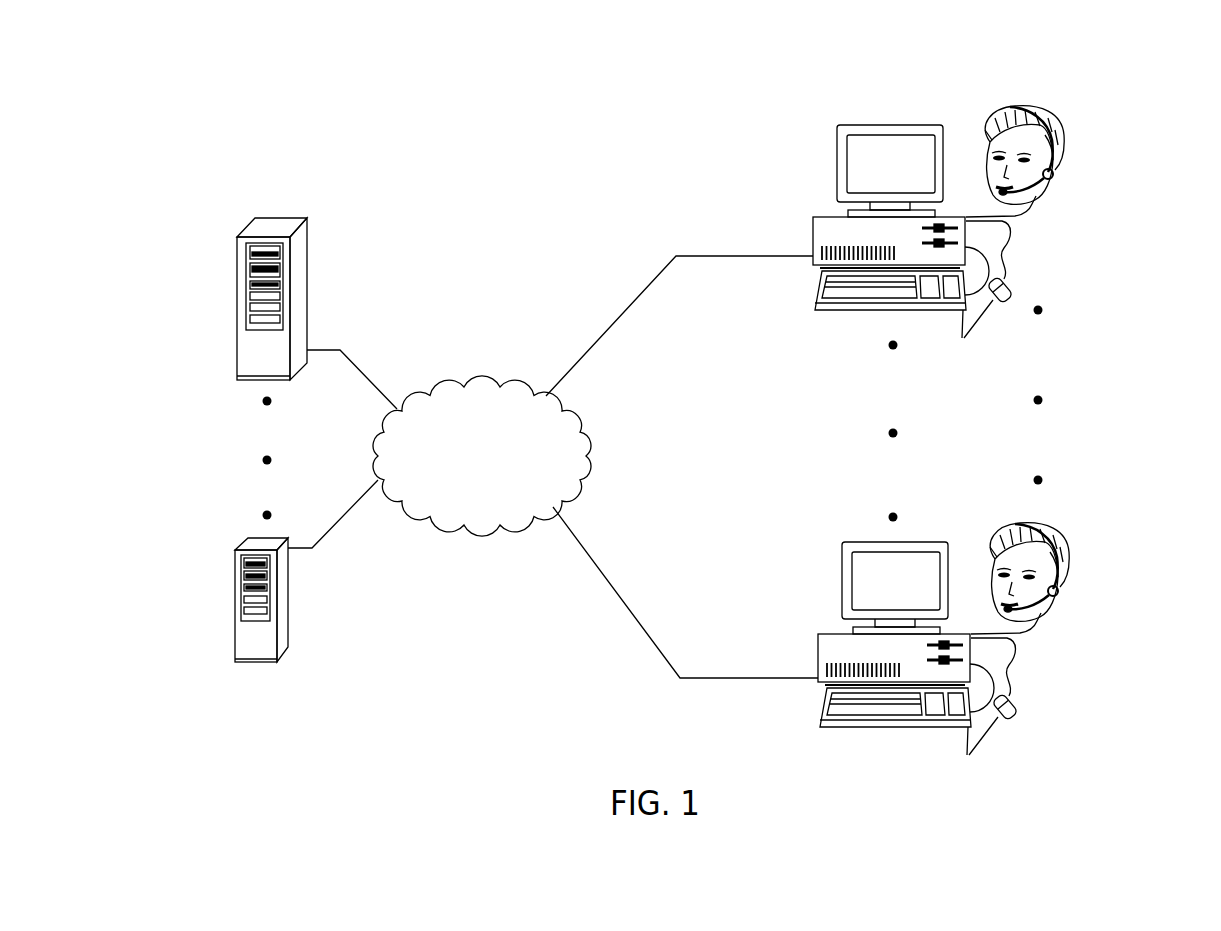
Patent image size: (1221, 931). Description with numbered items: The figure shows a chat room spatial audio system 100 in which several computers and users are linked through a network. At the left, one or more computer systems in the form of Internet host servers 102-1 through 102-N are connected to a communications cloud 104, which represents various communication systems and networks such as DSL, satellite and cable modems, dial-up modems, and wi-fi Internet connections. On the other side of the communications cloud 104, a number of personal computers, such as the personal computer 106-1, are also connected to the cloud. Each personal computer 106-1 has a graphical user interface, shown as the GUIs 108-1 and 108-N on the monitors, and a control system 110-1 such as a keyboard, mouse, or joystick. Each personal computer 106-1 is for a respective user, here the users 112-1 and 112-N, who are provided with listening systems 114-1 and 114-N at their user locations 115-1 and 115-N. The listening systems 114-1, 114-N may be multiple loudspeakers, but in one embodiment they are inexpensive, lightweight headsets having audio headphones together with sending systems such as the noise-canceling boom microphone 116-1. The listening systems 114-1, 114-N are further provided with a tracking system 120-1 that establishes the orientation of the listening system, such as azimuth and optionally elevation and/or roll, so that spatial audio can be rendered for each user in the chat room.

The chat room spatial audio system 100 is at (248, 150).
The Internet host server 102-1 is at (278, 226).
The Internet host server 102-N is at (283, 615).
The communications cloud 104 is at (501, 463).
The personal computer 106-1 is at (808, 235).
The graphical user interface 108-1 is at (918, 176).
The graphical user interface 108-N is at (895, 588).
The control system 110-1 is at (916, 504).
The user 112-1 is at (1046, 211).
The user 112-N is at (1069, 590).
The listening system 114-1 is at (1067, 170).
The listening system 114-N is at (1113, 553).
The user location 115-1 is at (915, 98).
The user location 115-N is at (1010, 554).
The noise-canceling boom microphone 116-1 is at (1050, 193).
The tracking system 120-1 is at (1063, 163).